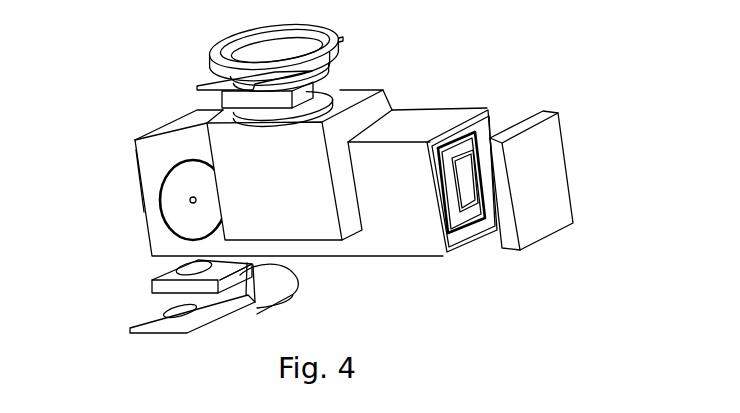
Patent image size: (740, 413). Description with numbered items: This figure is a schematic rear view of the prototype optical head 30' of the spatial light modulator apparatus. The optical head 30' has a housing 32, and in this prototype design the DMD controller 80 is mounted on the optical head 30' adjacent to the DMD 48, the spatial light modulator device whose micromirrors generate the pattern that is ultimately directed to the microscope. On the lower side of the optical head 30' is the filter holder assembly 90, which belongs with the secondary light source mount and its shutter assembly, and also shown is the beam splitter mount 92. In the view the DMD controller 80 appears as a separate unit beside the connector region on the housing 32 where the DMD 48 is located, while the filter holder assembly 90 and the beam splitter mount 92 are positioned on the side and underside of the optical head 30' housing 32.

The optical head 30' is at (279, 167).
The housing 32 is at (446, 213).
The DMD 48 is at (468, 190).
The DMD controller 80 is at (573, 190).
The filter holder assembly 90 is at (150, 288).
The beam splitter mount 92 is at (172, 200).